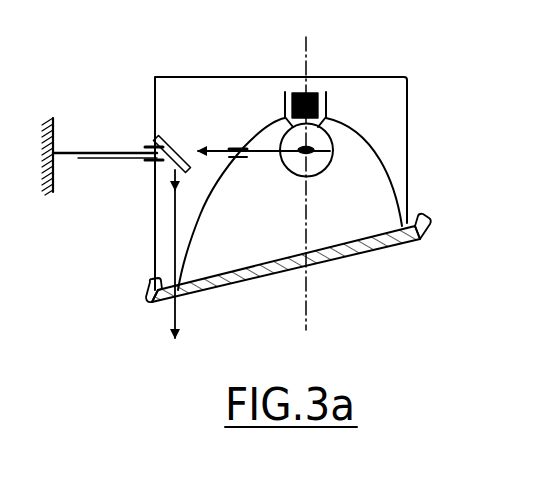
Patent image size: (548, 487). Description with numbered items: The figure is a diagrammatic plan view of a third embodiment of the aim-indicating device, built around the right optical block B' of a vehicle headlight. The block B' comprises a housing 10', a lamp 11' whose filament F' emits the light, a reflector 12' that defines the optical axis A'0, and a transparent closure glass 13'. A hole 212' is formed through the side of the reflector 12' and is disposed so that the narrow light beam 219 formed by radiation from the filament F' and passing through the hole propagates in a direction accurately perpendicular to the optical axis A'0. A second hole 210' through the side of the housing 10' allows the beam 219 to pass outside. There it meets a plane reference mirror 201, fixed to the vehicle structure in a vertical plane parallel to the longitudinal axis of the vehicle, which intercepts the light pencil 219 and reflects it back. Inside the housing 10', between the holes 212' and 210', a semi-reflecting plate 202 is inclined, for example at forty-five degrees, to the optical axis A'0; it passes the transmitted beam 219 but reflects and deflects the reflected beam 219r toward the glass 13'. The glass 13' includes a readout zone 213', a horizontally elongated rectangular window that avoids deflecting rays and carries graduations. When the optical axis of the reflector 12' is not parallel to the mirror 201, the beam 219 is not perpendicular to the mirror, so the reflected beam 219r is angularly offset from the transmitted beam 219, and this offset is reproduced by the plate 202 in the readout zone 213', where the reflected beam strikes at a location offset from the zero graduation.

The housing 10' is at (281, 150).
The right optical block B' is at (133, 32).
The optical axis A'0 is at (345, 193).
The lamp 11' is at (334, 130).
The filament F' is at (334, 178).
The reflector 12' is at (323, 203).
The transparent closure glass 13' is at (305, 258).
The readout zone 213' is at (218, 260).
The hole 212' is at (264, 123).
The semi-reflecting plate 202 is at (170, 144).
The hole 210' is at (130, 192).
The narrow light beam 219 is at (112, 151).
The reflected beam 219r is at (76, 161).
The plane reference mirror 201 is at (63, 120).